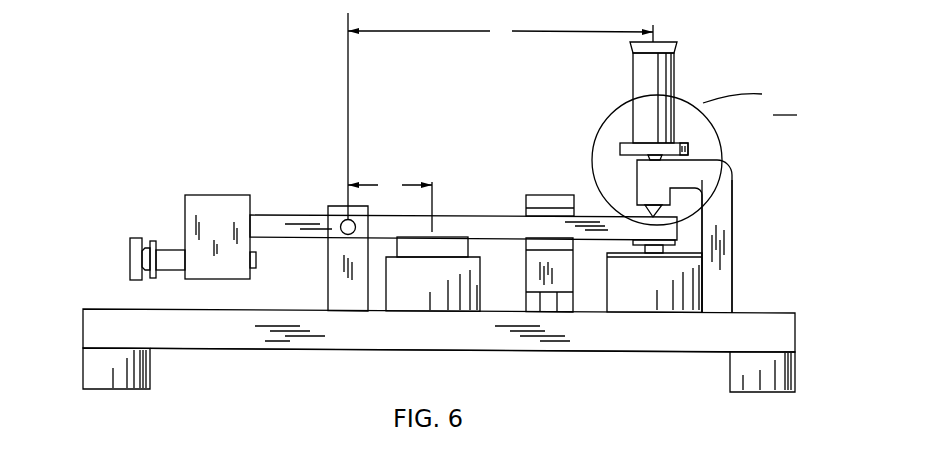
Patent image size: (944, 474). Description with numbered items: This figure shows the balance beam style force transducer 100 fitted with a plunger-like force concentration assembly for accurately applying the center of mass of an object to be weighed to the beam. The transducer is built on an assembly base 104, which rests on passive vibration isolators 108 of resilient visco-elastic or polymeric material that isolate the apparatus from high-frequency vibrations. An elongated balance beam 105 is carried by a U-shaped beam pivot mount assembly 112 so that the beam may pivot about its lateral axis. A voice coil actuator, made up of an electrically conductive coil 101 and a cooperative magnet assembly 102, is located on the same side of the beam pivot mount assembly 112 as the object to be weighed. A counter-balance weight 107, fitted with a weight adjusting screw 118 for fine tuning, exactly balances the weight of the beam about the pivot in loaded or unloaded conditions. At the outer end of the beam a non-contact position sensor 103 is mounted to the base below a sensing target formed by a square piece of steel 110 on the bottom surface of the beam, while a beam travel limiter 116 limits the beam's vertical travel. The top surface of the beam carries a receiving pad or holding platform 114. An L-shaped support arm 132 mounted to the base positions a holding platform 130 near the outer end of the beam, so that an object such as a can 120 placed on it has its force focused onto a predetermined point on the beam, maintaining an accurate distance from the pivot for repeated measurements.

The force transducer 100 is at (288, 108).
The electrically conductive coil 101 is at (450, 290).
The magnet assembly 102 is at (415, 247).
The position sensor 103 is at (623, 298).
The assembly base 104 is at (233, 338).
The elongated balance beam 105 is at (497, 220).
The counter-balance weight 107 is at (215, 196).
The passive vibration isolators 108 is at (100, 369).
The square piece of steel 110 is at (677, 243).
The beam pivot mount assembly 112 is at (342, 288).
The holding platform 114 is at (672, 212).
The beam travel limiter 116 is at (555, 195).
The weight adjusting screw 118 is at (132, 250).
The can 120 is at (676, 120).
The holding platform 130 is at (690, 148).
The L-shaped support arm 132 is at (727, 212).